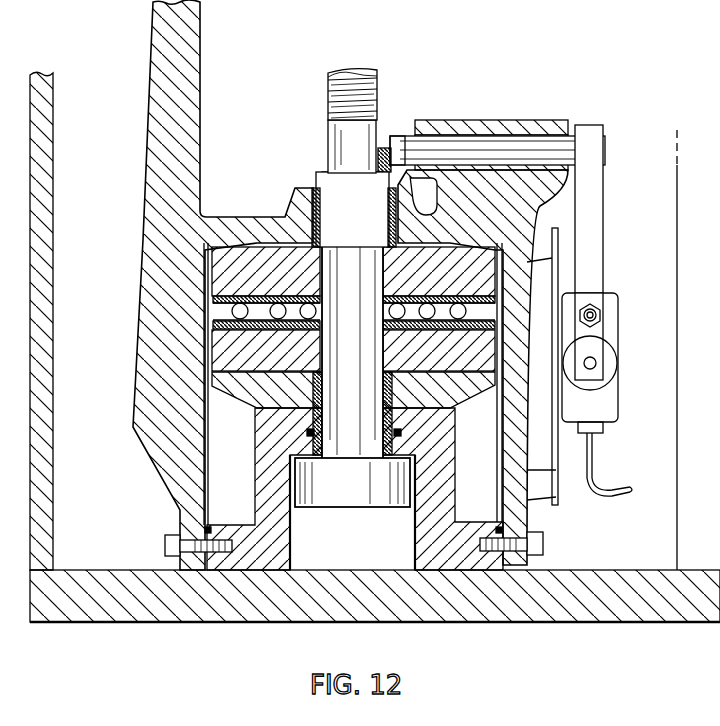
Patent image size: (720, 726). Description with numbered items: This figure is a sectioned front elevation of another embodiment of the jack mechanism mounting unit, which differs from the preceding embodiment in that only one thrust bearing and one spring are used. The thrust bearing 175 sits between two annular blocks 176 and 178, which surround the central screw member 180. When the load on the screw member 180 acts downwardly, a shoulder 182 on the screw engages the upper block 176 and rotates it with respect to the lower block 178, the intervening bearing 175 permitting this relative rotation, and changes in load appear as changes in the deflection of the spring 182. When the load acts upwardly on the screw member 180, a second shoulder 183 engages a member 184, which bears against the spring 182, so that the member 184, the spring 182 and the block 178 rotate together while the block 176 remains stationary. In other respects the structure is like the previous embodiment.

The thrust bearing 175 is at (215, 301).
The annular block 176 is at (222, 275).
The annular block 178 is at (222, 349).
The screw member 180 is at (348, 149).
The shoulder 182 is at (212, 390).
The shoulder 183 is at (400, 452).
The member 184 is at (402, 437).